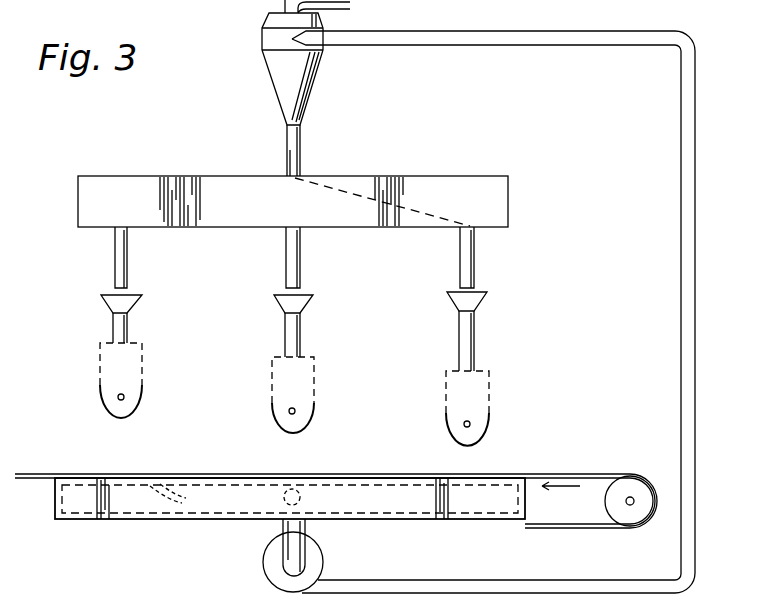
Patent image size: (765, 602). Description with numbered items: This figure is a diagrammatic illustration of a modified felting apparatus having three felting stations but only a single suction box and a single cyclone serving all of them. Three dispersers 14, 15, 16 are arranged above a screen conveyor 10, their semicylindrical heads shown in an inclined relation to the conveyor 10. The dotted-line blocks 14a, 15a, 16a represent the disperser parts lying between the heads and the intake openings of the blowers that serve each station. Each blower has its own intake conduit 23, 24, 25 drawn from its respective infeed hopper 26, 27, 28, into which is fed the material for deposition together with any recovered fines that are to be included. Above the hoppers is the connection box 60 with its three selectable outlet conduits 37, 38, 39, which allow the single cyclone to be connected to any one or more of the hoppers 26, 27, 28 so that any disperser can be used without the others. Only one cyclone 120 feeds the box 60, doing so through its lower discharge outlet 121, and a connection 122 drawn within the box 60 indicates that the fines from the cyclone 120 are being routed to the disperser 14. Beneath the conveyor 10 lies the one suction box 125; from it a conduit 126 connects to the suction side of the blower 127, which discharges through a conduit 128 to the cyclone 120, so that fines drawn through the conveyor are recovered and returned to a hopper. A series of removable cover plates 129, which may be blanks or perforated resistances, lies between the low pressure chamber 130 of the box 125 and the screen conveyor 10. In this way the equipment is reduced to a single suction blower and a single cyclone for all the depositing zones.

The conveyor 10 is at (576, 472).
The disperser 14 is at (496, 427).
The disperser part 14a is at (489, 387).
The disperser 15 is at (321, 413).
The disperser part 15a is at (314, 373).
The disperser 16 is at (150, 407).
The disperser part 16a is at (142, 365).
The intake conduit 23 is at (472, 336).
The intake conduit 24 is at (300, 332).
The intake conduit 25 is at (125, 331).
The infeed hopper 26 is at (476, 304).
The infeed hopper 27 is at (305, 306).
The infeed hopper 28 is at (128, 307).
The outlet conduit 37 is at (474, 259).
The outlet conduit 38 is at (300, 260).
The outlet conduit 39 is at (128, 262).
The connection box 60 is at (500, 195).
The cyclone 120 is at (307, 86).
The lower discharge outlet 121 is at (302, 148).
The connection 122 is at (371, 198).
The suction box 125 is at (452, 508).
The conduit 126 is at (306, 527).
The blower 127 is at (267, 563).
The conduit 128 is at (484, 581).
The removable cover plates 129 is at (225, 498).
The low pressure chamber 130 is at (136, 506).